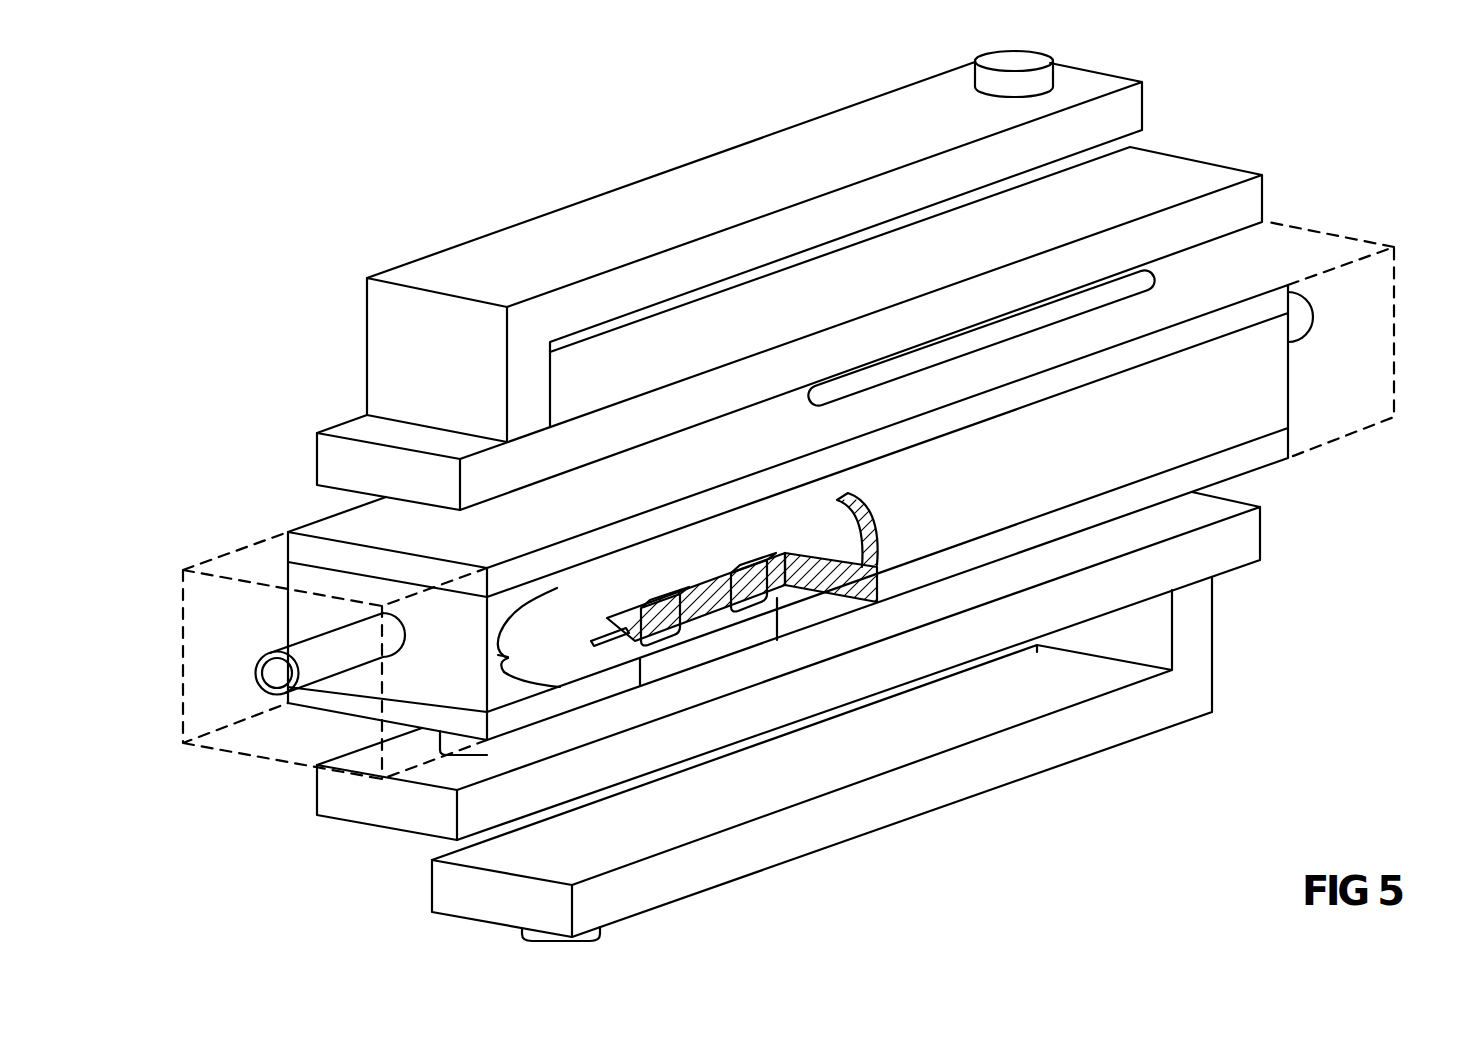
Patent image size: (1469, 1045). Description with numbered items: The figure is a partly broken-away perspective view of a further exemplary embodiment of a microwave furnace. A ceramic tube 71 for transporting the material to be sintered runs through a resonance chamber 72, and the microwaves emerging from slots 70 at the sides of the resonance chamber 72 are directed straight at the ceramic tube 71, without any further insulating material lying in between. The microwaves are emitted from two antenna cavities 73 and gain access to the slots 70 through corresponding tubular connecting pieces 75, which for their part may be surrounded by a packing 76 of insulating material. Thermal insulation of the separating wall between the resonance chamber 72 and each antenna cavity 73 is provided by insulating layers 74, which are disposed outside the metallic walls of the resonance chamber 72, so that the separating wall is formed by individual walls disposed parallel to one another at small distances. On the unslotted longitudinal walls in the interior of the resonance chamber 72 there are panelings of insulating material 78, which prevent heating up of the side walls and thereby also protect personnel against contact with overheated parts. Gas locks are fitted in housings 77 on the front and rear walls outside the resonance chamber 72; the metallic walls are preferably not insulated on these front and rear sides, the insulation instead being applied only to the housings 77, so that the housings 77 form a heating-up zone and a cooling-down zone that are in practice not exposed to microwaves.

The slots 70 is at (737, 558).
The ceramic tube 71 is at (548, 597).
The resonance chamber 72 is at (540, 663).
The antenna cavities 73 is at (1183, 183).
The insulating layers 74 is at (1290, 284).
The tubular connecting pieces 75 is at (745, 590).
The packing of insulating material 76 is at (690, 667).
The housings 77 is at (203, 608).
The panelings of insulating material 78 is at (877, 548).